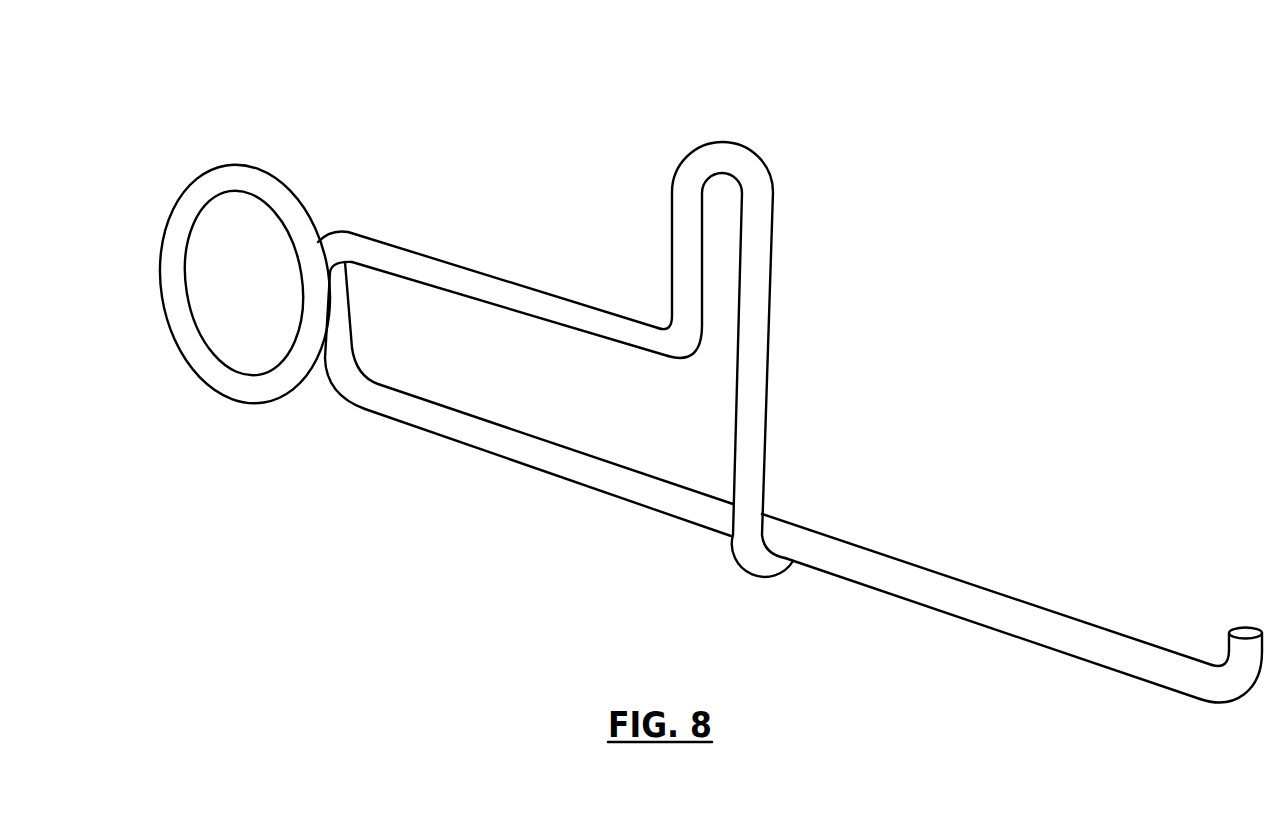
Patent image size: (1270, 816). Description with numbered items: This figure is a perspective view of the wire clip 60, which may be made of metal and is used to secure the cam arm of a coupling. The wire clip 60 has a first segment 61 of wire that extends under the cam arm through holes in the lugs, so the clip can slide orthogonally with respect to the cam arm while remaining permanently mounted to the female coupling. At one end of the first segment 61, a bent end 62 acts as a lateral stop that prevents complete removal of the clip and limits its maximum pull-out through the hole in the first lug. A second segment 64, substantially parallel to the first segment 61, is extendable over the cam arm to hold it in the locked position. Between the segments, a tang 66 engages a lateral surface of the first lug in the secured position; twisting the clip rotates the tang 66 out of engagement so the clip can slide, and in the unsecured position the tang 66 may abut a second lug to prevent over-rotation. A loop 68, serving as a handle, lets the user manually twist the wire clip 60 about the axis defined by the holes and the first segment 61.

The wire clip 60 is at (408, 96).
The first segment 61 is at (1008, 597).
The end 62 is at (1247, 625).
The second segment 64 is at (528, 288).
The tang 66 is at (724, 143).
The loop 68 is at (251, 170).